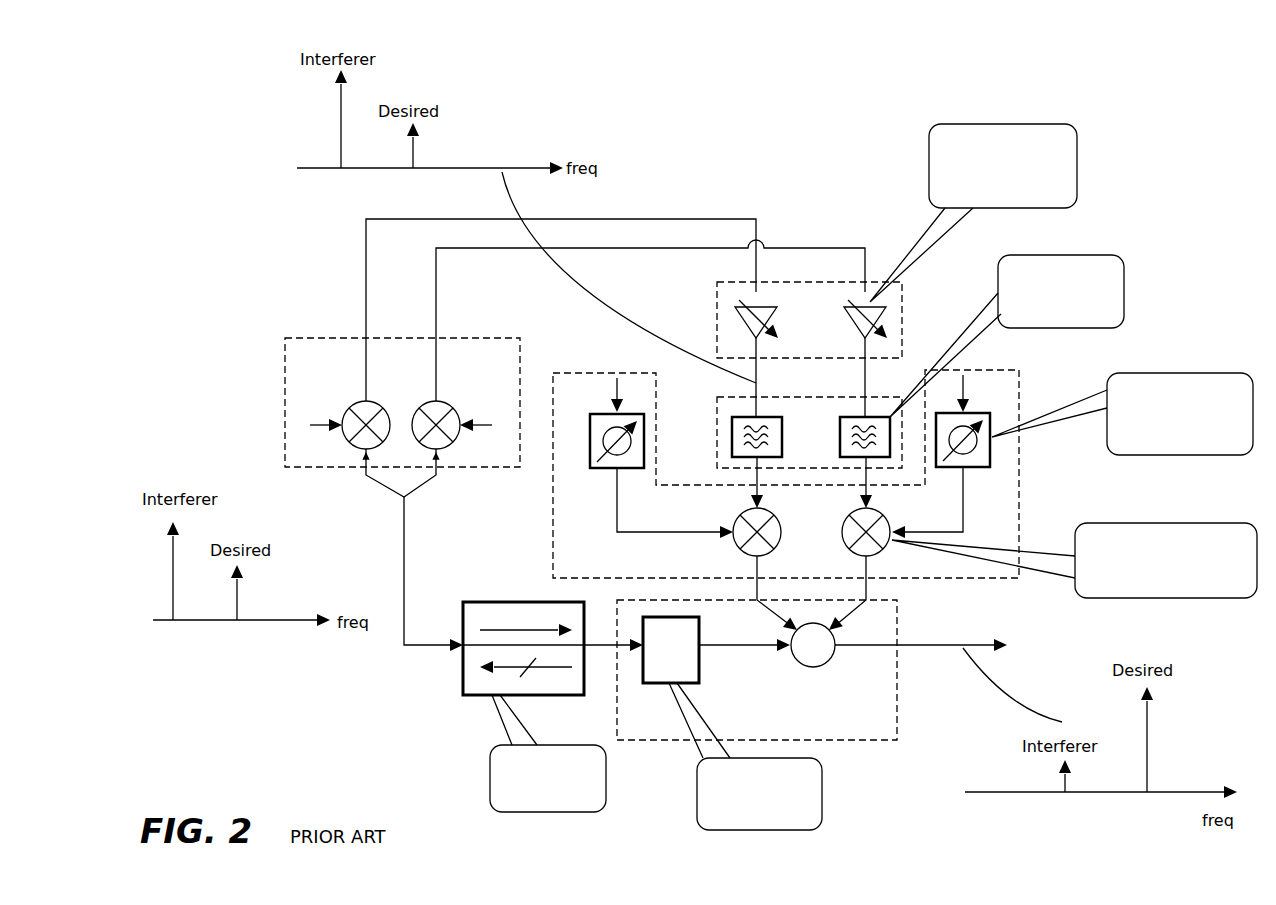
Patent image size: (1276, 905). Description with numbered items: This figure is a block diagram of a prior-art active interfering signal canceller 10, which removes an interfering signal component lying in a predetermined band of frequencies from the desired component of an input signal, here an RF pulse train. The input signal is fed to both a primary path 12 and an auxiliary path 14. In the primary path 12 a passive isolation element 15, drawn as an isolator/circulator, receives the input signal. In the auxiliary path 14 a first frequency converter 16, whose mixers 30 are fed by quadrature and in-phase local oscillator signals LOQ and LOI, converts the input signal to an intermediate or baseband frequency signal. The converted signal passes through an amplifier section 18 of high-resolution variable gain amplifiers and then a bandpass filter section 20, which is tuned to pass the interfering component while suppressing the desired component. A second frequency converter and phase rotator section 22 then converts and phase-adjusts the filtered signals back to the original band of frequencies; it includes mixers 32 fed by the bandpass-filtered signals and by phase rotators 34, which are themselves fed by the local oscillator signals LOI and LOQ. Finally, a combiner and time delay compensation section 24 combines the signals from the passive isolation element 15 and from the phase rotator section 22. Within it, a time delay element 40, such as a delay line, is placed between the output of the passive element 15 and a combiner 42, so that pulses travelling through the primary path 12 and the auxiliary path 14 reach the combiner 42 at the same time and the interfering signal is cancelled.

The active interfering signal canceller 10 is at (188, 360).
The primary path 12 is at (634, 610).
The auxiliary path 14 is at (615, 296).
The passive isolation element 15 is at (510, 602).
The first frequency converter 16 is at (313, 362).
The amplifier section 18 is at (717, 312).
The bandpass filter section 20 is at (717, 417).
The second frequency converter and phase rotator section 22 is at (575, 373).
The combiner and time delay compensation section 24 is at (649, 730).
The LO mixer 30 is at (373, 401).
The mixers 32 is at (742, 552).
The phase rotators 34 is at (603, 470).
The time delay element 40 is at (699, 664).
The combiner 42 is at (815, 667).